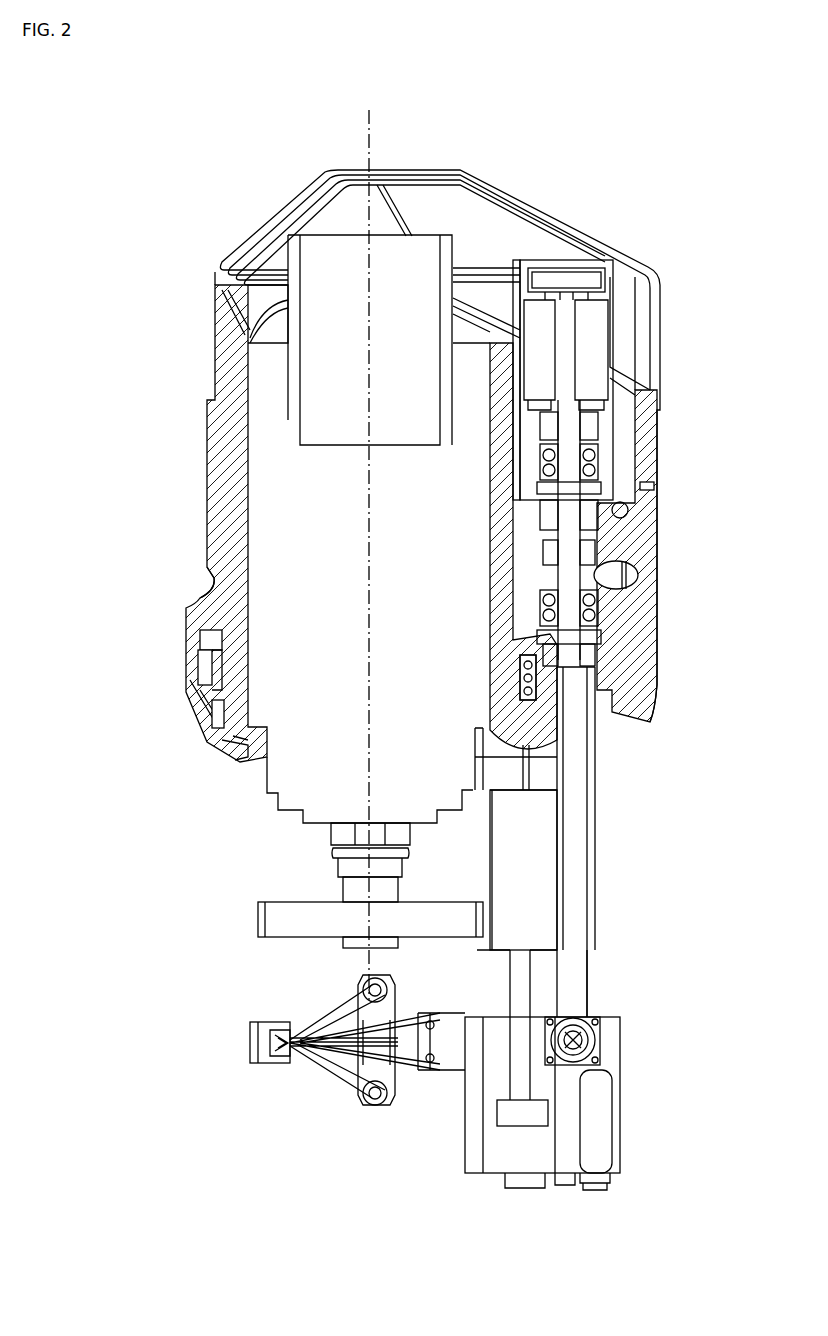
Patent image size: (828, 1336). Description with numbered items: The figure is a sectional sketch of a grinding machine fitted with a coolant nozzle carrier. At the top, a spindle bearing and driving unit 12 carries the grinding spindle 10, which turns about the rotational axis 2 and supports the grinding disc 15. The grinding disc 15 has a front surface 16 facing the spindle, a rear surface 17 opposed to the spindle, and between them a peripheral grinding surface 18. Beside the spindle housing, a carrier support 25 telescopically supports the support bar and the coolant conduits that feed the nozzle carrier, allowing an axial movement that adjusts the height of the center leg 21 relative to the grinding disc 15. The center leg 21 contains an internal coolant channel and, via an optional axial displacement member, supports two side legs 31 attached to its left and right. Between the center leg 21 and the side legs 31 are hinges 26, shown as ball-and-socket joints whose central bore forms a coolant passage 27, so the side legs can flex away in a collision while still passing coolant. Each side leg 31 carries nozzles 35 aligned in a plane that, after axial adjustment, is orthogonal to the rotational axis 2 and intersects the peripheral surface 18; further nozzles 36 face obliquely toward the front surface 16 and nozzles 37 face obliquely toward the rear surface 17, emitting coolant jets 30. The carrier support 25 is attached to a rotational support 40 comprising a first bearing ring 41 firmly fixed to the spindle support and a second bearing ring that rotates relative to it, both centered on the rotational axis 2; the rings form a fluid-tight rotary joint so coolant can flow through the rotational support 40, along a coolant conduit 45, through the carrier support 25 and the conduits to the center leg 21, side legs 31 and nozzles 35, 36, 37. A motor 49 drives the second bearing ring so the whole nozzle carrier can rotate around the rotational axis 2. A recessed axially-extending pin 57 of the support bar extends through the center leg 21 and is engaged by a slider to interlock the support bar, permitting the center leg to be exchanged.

The rotational axis 2 is at (369, 125).
The grinding spindle 10 is at (422, 848).
The spindle bearing and driving unit 12 is at (317, 516).
The grinding disc 15 is at (336, 918).
The front surface 16 is at (276, 902).
The rear surface 17 is at (276, 940).
The peripheral grinding surface 18 is at (257, 917).
The center leg 21 is at (497, 1175).
The carrier support 25 is at (596, 870).
The hinge 26 is at (596, 1025).
The coolant passage 27 is at (585, 1045).
The coolant jets 30 is at (350, 1065).
The side leg 31 is at (318, 1065).
The nozzle 35 is at (284, 1065).
The nozzle 36 is at (396, 990).
The nozzle 37 is at (397, 1092).
The rotational support 40 is at (176, 663).
The first bearing ring 41 is at (205, 600).
The coolant conduit 45 is at (200, 722).
The motor 49 is at (565, 340).
The recessed axially-extending pin 57 is at (560, 1190).